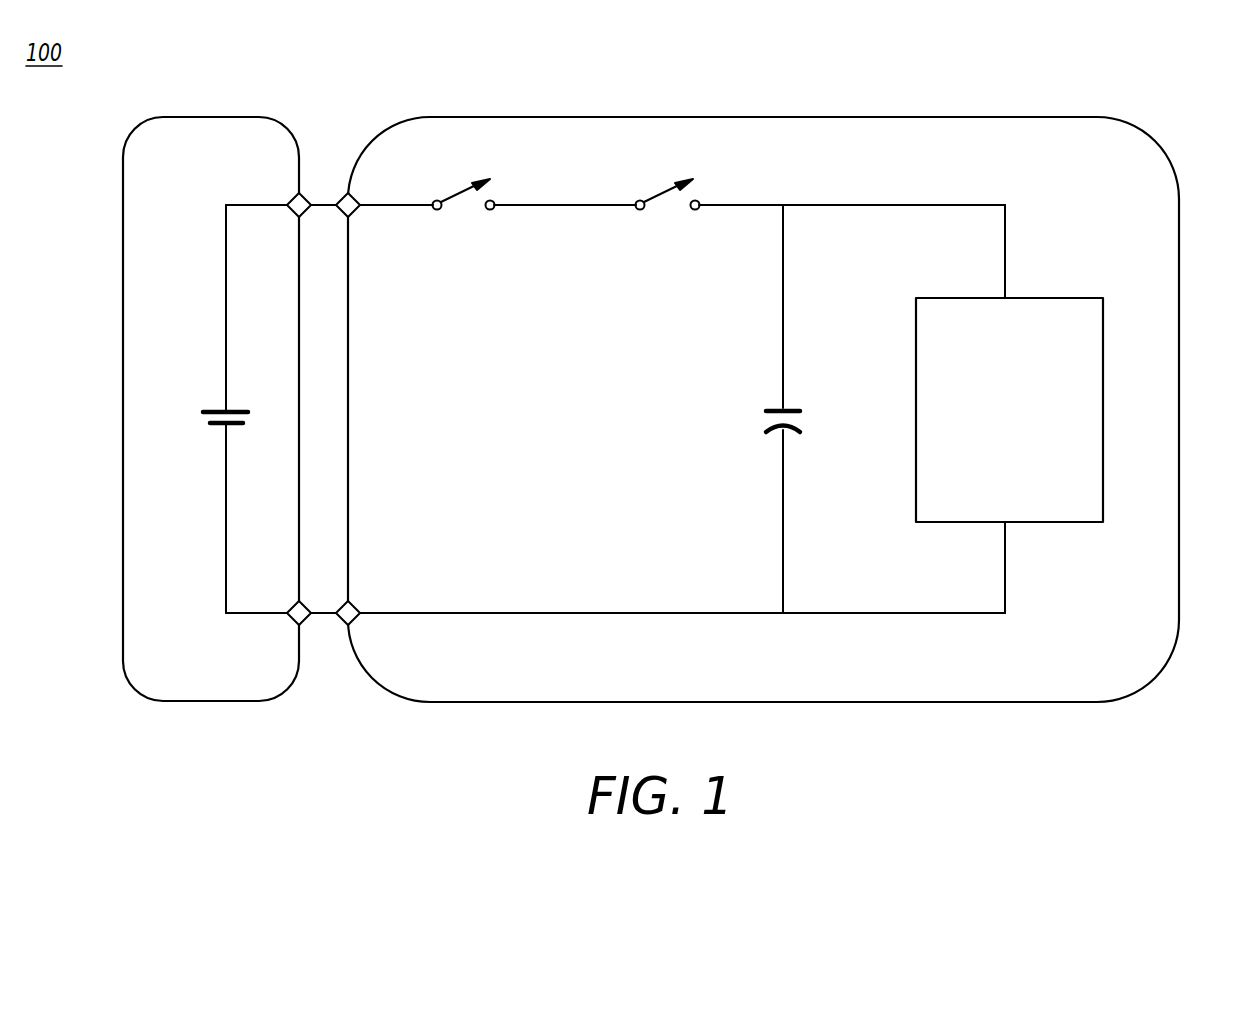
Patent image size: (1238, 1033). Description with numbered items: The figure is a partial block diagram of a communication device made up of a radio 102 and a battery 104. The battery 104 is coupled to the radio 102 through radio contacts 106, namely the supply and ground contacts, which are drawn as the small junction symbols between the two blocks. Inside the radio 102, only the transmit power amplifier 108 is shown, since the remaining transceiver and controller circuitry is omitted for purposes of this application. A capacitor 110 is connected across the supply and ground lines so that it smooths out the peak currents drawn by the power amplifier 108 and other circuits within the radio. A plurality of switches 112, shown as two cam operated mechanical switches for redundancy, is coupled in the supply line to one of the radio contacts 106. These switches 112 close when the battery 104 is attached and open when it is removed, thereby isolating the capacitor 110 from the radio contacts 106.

The radio 102 is at (1155, 142).
The battery 104 is at (139, 132).
The radio contacts 106 is at (360, 211).
The transmit power amplifier 108 is at (932, 297).
The capacitor 110 is at (767, 408).
The switches 112 is at (467, 184).